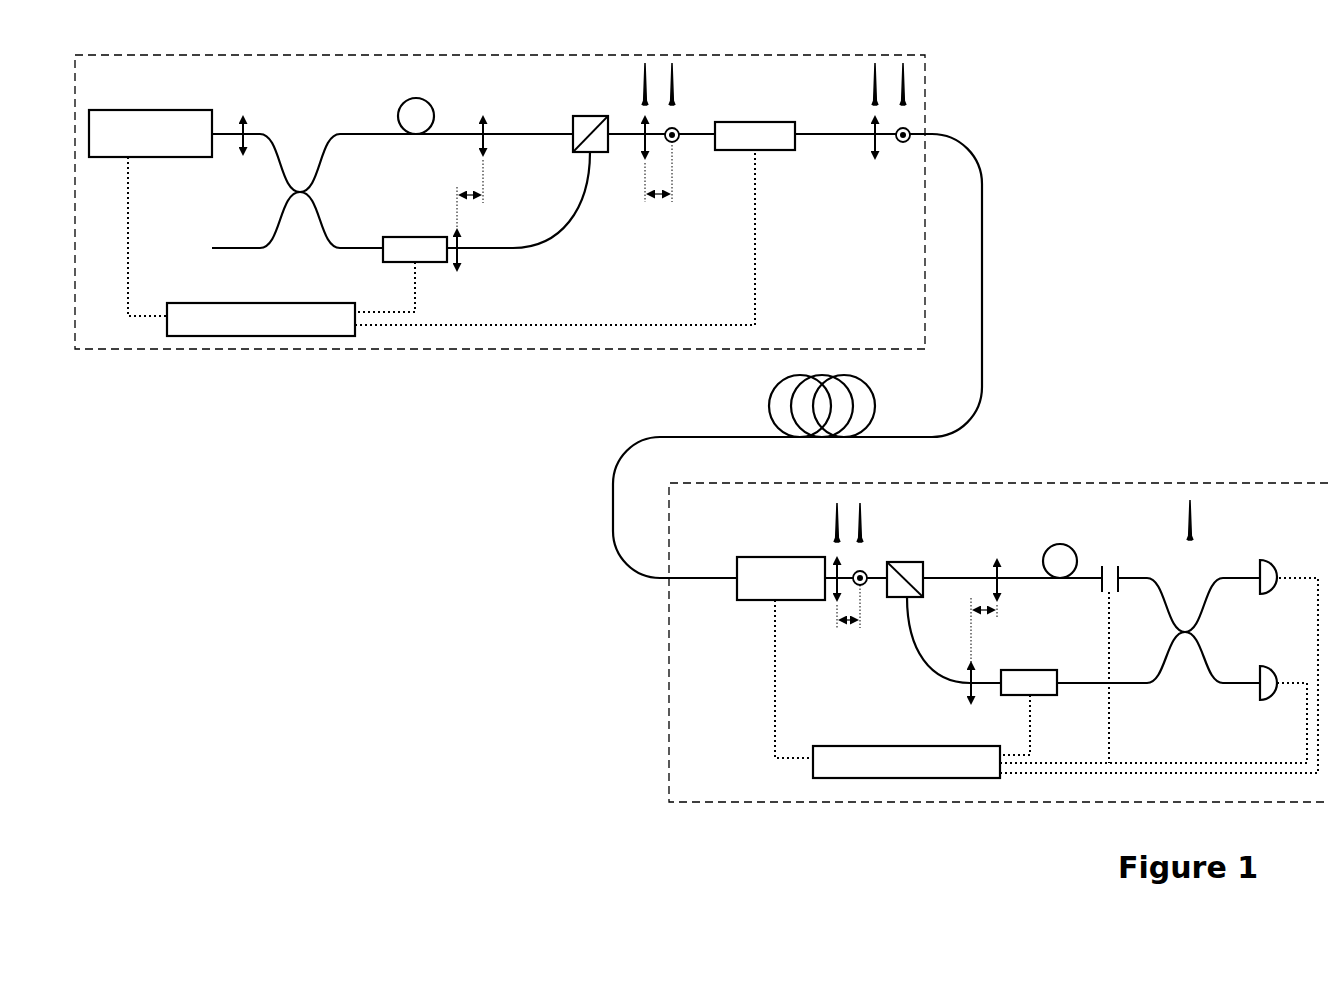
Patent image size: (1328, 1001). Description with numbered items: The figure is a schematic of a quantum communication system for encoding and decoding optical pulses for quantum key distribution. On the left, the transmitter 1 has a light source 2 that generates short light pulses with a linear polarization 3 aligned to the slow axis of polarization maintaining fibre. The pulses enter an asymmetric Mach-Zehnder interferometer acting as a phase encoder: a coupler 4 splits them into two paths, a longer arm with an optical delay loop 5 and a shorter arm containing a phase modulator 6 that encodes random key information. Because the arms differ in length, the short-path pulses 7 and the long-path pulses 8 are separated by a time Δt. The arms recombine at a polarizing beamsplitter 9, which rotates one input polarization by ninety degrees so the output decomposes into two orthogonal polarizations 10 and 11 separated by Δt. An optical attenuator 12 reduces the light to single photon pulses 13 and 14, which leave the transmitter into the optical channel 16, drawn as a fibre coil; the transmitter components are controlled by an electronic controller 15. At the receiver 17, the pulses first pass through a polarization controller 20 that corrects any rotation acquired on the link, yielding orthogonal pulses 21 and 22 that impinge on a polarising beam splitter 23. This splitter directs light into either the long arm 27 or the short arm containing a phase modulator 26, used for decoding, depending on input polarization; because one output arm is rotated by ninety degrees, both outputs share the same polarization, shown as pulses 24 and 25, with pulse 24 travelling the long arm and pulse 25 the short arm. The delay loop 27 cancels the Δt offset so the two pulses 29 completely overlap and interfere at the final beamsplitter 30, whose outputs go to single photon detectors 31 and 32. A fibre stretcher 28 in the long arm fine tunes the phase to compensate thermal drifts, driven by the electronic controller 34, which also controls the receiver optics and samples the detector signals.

The transmitter 1 is at (384, 363).
The light source 2 is at (148, 92).
The linear polarization 3 is at (243, 95).
The coupler 4 is at (300, 238).
The optical delay loop 5 is at (413, 87).
The phase modulator 6 is at (428, 274).
The light pulses following the short path 7 is at (458, 180).
The light pulses following the long path 8 is at (483, 98).
The polarizing beamsplitter 9 is at (593, 105).
The orthogonal polarization pulse 10 is at (645, 50).
The orthogonal polarization pulse 11 is at (673, 33).
The optical attenuator 12 is at (755, 108).
The single photon pulse 13 is at (875, 48).
The single photon pulse 14 is at (903, 32).
The electronic controller 15 is at (220, 293).
The optical channel 16 is at (895, 448).
The receiver 17 is at (976, 810).
The polarization controller 20 is at (777, 545).
The orthogonal light pulse 21 is at (835, 488).
The orthogonal light pulse 22 is at (872, 475).
The polarising beam splitter 23 is at (915, 605).
The light pulse 24 is at (972, 715).
The light pulse 25 is at (997, 542).
The phase modulator 26 is at (1040, 703).
The long arm delay loop 27 is at (1058, 538).
The fibre stretcher 28 is at (1108, 528).
The overlapping light pulses 29 is at (1192, 473).
The final beamsplitter 30 is at (1196, 705).
The single photon detector 31 is at (1267, 548).
The single photon detector 32 is at (1265, 710).
The electronic controller 34 is at (900, 730).